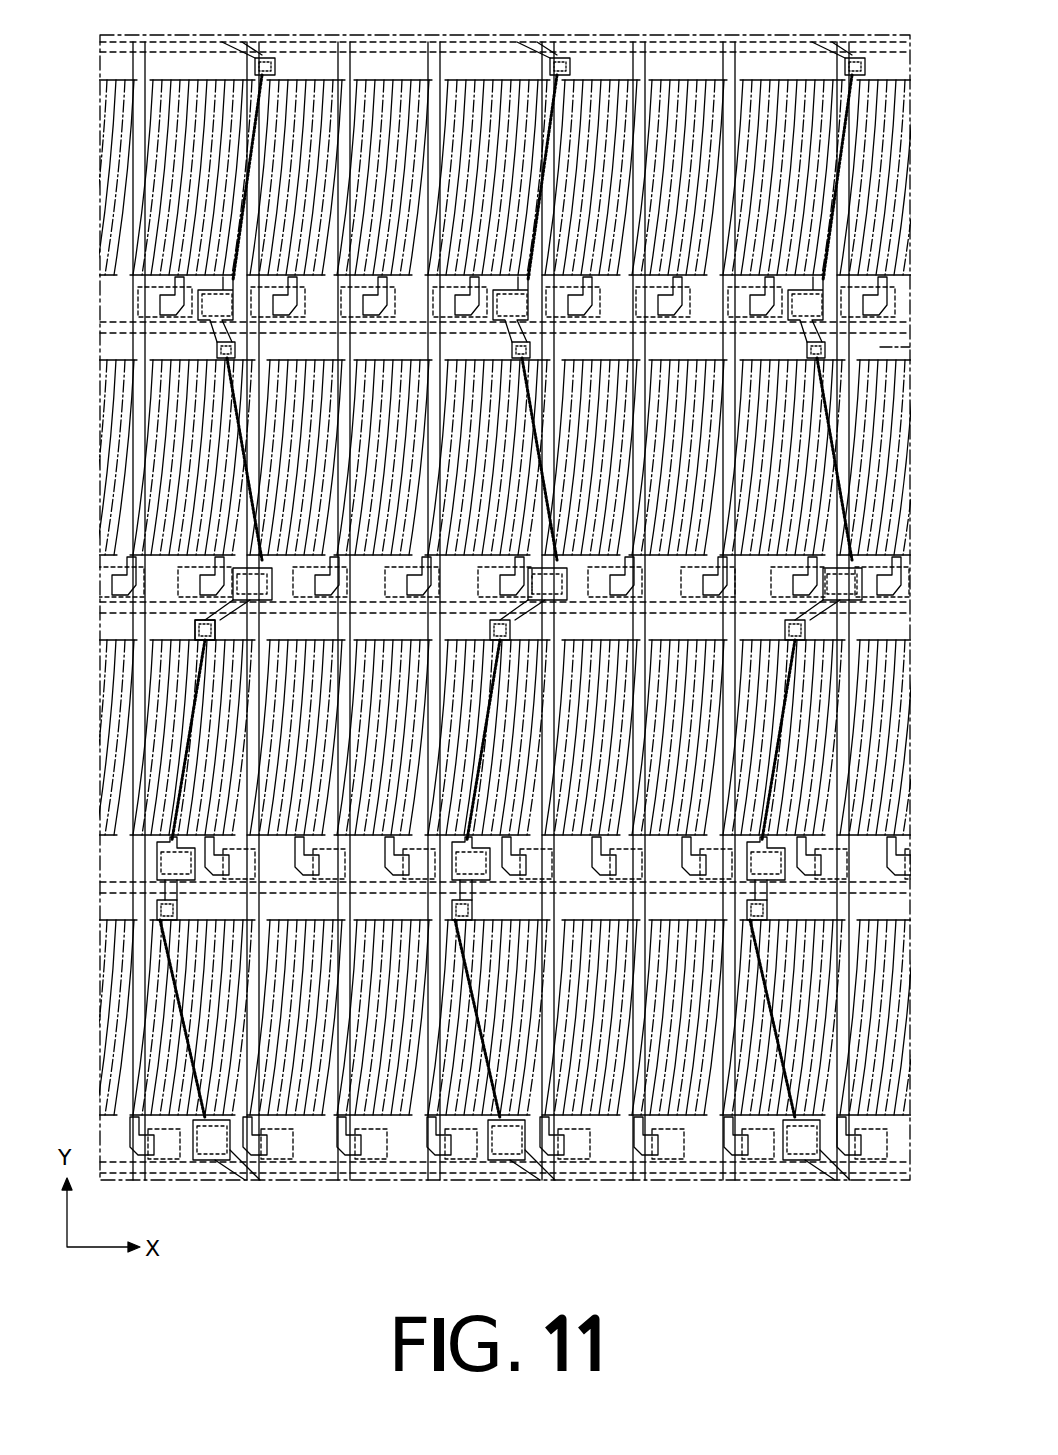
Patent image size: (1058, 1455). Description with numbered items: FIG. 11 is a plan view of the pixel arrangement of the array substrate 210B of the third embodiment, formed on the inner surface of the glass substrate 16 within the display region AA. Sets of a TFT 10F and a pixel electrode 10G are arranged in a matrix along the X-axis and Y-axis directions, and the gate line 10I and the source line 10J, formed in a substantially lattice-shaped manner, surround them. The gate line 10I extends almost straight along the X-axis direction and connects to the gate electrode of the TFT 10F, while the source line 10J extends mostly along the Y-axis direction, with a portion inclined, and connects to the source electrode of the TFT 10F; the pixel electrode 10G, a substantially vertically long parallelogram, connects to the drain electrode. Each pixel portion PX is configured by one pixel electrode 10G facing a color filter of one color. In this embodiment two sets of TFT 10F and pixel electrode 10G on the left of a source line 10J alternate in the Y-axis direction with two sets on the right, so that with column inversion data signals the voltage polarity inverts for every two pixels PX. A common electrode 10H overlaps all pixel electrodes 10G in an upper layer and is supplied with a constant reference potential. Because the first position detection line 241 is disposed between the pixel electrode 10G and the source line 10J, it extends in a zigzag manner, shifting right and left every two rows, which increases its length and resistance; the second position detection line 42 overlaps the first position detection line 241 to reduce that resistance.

The glass substrate 16 is at (150, 70).
The first position detection line 241 is at (518, 295).
The second position detection line 42 is at (560, 155).
The array substrate 210B is at (870, 36).
The pixel electrode 10G is at (217, 356).
The display region AA is at (880, 347).
The pixel portion PX is at (313, 481).
The gate line 10I is at (130, 605).
The TFT 10F is at (205, 620).
The common electrode 10H is at (812, 628).
The source line 10J is at (150, 997).